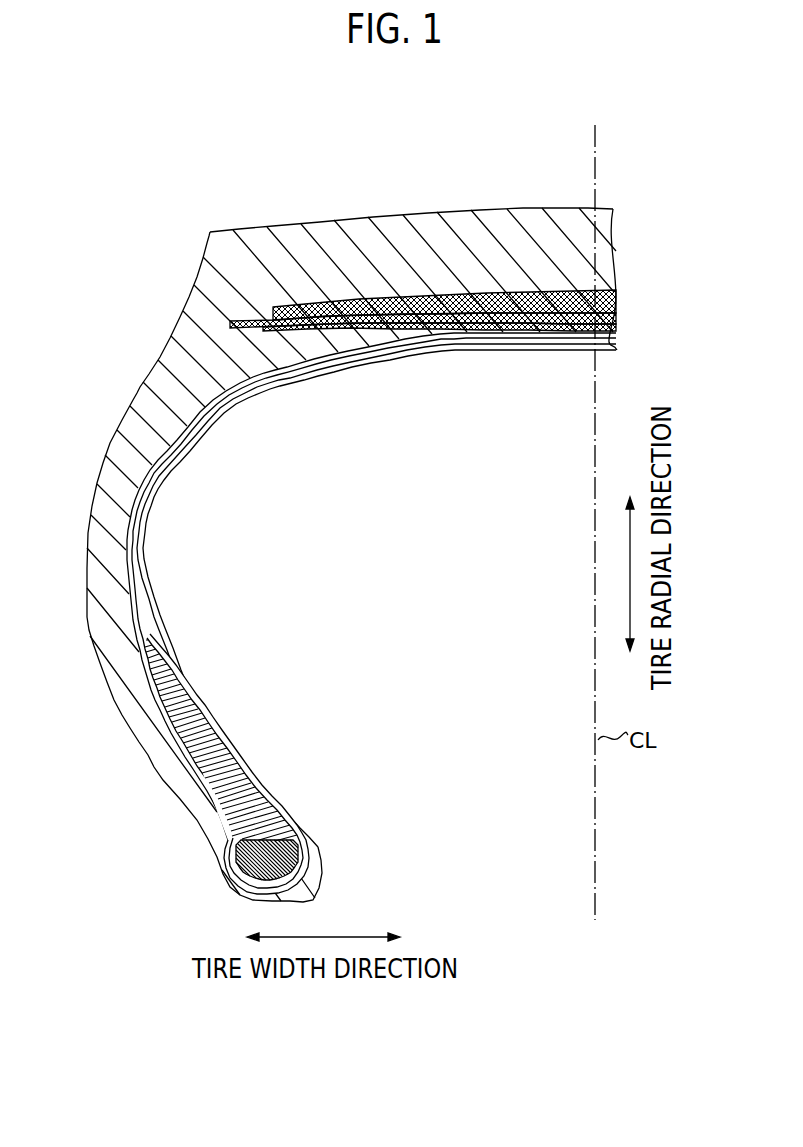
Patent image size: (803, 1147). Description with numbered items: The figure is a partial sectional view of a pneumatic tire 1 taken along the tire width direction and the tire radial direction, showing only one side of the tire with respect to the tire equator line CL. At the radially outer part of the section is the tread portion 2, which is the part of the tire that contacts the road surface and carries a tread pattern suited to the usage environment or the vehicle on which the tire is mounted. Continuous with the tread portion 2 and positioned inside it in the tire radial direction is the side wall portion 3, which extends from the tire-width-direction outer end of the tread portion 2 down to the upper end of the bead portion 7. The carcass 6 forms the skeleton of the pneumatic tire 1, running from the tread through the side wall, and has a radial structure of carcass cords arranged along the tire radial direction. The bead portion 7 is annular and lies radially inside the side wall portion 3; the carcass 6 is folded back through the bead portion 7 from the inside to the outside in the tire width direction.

The pneumatic tire 1 is at (413, 163).
The tread portion 2 is at (343, 214).
The side wall portion 3 is at (92, 408).
The carcass 6 is at (146, 558).
The bead portion 7 is at (204, 863).